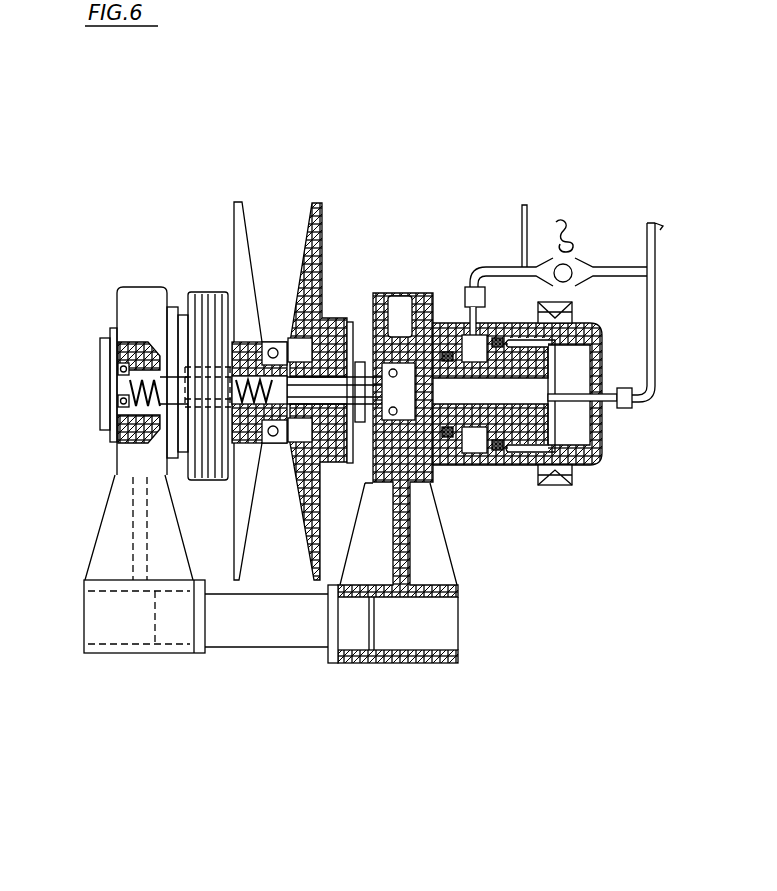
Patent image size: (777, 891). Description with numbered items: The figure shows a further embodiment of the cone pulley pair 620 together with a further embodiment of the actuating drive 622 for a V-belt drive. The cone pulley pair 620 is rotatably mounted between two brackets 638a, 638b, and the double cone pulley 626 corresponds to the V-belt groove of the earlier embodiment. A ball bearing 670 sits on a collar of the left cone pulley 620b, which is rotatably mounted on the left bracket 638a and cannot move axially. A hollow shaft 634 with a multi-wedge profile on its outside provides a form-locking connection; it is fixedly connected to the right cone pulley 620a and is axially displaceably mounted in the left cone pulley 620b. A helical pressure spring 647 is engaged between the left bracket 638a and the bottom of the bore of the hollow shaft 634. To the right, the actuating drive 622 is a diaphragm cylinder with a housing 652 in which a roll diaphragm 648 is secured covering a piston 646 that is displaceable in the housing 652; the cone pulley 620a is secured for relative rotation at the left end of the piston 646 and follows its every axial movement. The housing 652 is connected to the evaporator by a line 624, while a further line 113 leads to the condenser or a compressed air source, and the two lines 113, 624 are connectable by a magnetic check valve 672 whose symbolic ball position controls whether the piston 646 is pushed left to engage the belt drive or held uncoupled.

The line 113 is at (522, 228).
The cone pulley pair 620 is at (281, 188).
The right cone pulley 620a is at (241, 202).
The left cone pulley 620b is at (324, 205).
The actuating drive 622 is at (605, 473).
The line 624 is at (662, 223).
The double cone pulley 626 is at (208, 300).
The hollow shaft 634 is at (352, 325).
The left bracket 638a is at (117, 628).
The right bracket 638b is at (395, 657).
The piston 646 is at (475, 418).
The helical pressure spring 647 is at (133, 381).
The roll diaphragm 648 is at (557, 428).
The housing 652 is at (508, 447).
The ball bearing 670 is at (273, 437).
The magnetic check valve 672 is at (573, 250).